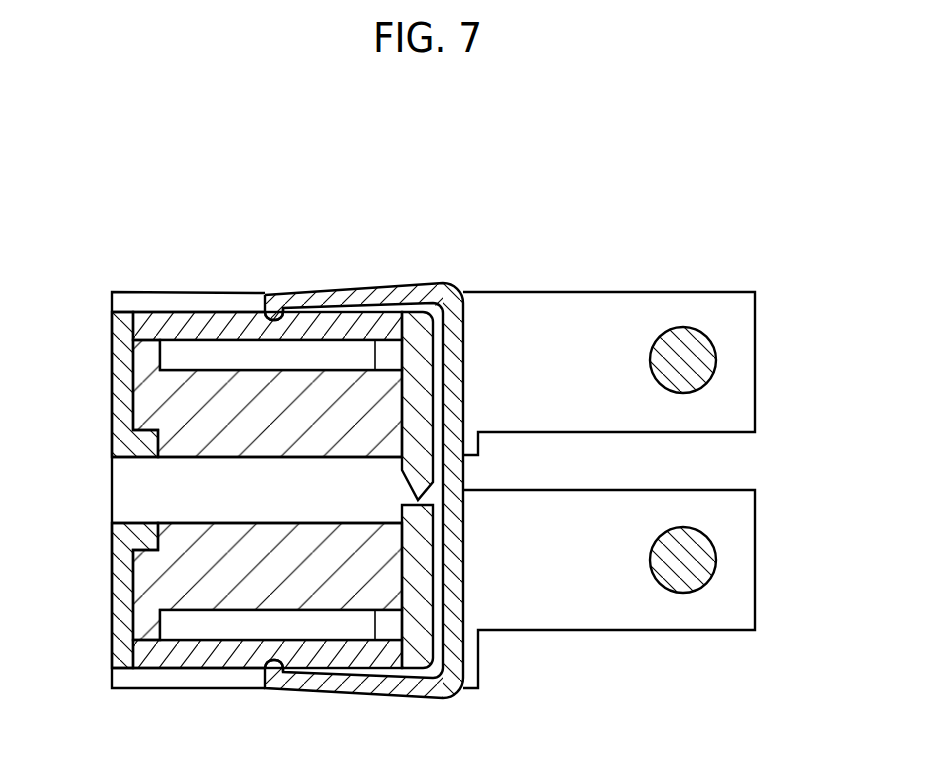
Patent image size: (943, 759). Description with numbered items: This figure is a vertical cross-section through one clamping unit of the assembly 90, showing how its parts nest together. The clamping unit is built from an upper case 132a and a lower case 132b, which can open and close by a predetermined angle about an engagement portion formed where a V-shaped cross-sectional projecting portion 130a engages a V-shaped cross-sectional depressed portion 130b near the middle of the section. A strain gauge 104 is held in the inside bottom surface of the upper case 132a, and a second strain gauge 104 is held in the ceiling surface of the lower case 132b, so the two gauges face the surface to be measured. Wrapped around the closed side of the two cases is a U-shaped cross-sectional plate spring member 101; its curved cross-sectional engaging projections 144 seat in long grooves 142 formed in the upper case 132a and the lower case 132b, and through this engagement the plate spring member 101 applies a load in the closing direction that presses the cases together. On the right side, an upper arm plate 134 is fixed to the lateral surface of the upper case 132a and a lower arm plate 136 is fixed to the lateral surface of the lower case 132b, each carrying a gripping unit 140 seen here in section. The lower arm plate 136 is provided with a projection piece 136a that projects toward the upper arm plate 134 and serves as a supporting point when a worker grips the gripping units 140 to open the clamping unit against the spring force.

The terminal unit 90 is at (112, 257).
The plate spring member 101 is at (465, 352).
The strain gauge 104 is at (185, 410).
The V-shaped cross sectional projecting portion 130a is at (392, 478).
The V-shaped cross sectional depressed portion 130b is at (466, 474).
The upper case 132a is at (185, 318).
The lower case 132b is at (185, 662).
The upper arm plate 134 is at (580, 340).
The lower arm plate 136 is at (580, 600).
The projection piece 136a is at (400, 513).
The gripping unit 140 is at (700, 360).
The long groove 142 is at (273, 310).
The engaging projection 144 is at (300, 655).